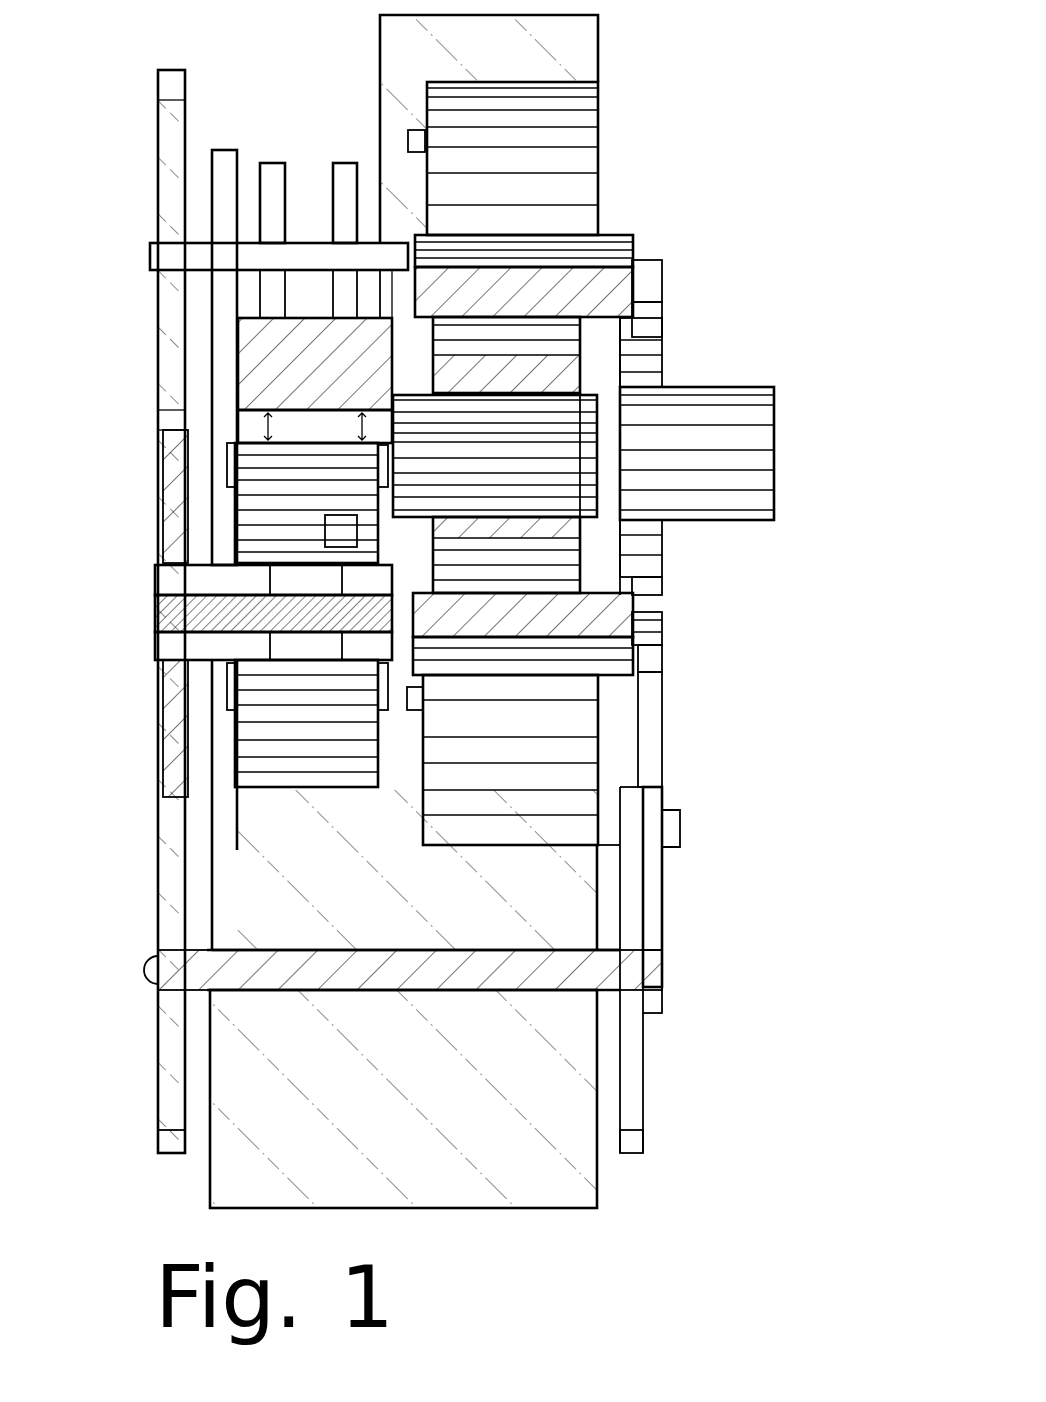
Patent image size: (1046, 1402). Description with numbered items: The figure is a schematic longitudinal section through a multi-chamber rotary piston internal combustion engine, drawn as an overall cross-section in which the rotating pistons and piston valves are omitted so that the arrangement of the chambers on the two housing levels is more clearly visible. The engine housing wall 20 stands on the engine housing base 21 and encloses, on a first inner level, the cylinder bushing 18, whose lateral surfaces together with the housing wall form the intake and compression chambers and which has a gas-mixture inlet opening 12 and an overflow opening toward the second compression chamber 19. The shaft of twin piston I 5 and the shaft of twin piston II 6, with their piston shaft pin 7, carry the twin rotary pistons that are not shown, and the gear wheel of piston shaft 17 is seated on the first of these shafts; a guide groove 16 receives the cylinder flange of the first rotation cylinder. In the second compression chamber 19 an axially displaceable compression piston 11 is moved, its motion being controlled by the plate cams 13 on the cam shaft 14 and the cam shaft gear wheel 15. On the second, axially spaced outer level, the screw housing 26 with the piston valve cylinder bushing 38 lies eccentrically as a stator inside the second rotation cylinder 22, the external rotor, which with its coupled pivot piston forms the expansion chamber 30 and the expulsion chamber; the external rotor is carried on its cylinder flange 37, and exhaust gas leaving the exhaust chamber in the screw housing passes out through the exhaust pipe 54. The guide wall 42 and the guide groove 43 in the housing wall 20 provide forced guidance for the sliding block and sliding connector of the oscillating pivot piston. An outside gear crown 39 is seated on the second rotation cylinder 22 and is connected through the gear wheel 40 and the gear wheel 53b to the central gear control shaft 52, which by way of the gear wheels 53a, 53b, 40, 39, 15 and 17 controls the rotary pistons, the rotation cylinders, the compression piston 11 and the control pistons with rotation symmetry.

The shaft of twin piston I 5 is at (225, 582).
The shaft of twin piston II 6 is at (312, 582).
The piston shaft pin 7 is at (230, 612).
The compression piston 11 is at (315, 370).
The gas-mixture inlet opening 12 is at (325, 532).
The plate cam 13 is at (308, 194).
The cam shaft 14 is at (190, 255).
The cam shaft gear wheel 15 is at (172, 168).
The guide groove for cylinder flange 16 is at (213, 569).
The gear wheel of piston shaft 17 is at (175, 710).
The cylinder bushing 18 is at (306, 500).
The second compression chamber 19 is at (318, 425).
The engine housing wall 20 is at (237, 190).
The engine housing base 21 is at (420, 1160).
The second rotation cylinder 22 is at (507, 332).
The screw housing 26 is at (497, 375).
The expansion chamber 30 is at (625, 323).
The cylinder flange of external rotor 37 is at (420, 248).
The piston valve cylinder bushing 38 is at (497, 452).
The outside gear crown 39 is at (530, 295).
The gear wheel 40 is at (655, 890).
The guide wall for sliding block 42 is at (513, 157).
The guide groove for sliding connector 43 is at (415, 140).
The gear control shaft 52 is at (475, 970).
The gear wheel on gear control shaft 53a is at (160, 1150).
The gear wheel on gear control shaft 53b is at (632, 1088).
The exhaust pipe 54 is at (700, 447).